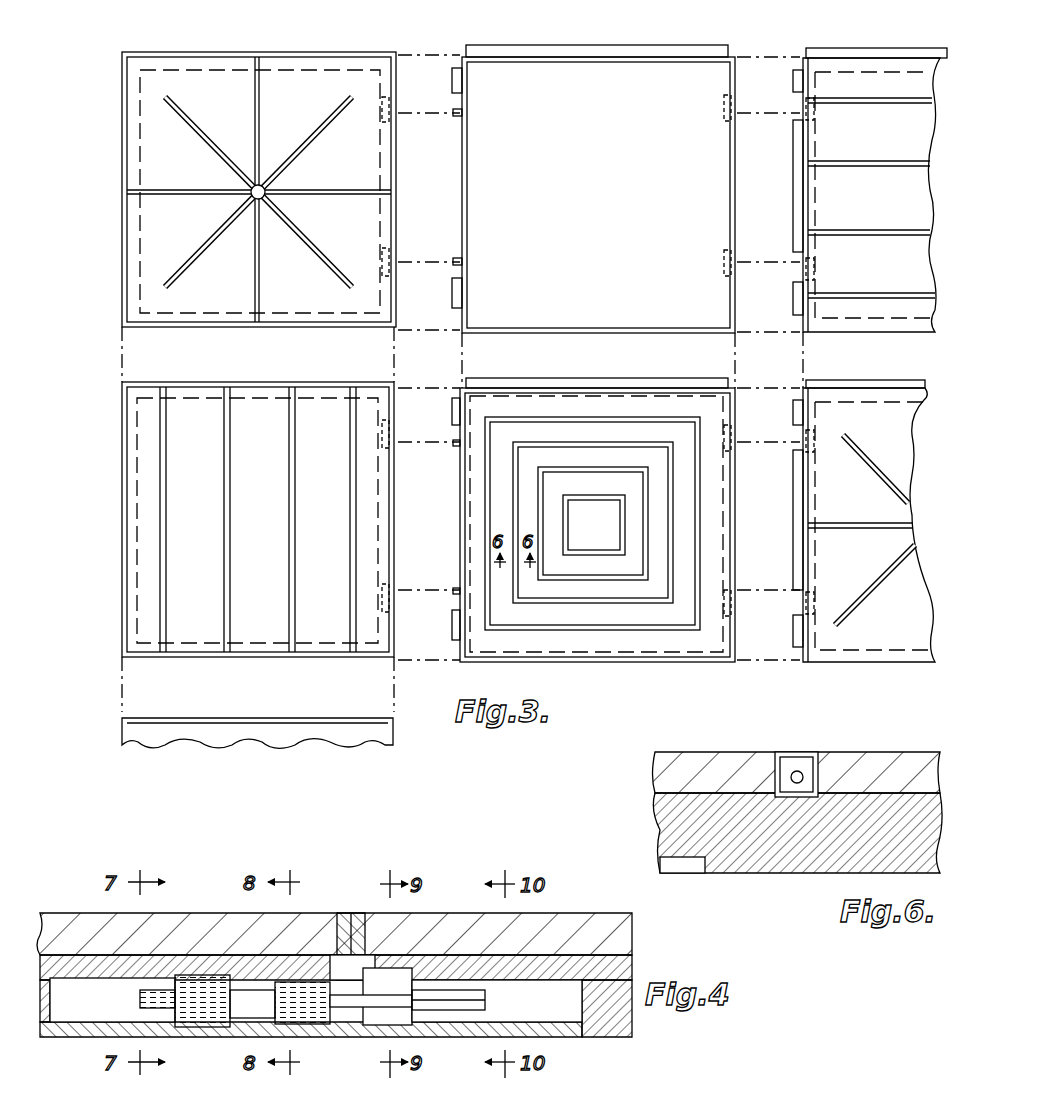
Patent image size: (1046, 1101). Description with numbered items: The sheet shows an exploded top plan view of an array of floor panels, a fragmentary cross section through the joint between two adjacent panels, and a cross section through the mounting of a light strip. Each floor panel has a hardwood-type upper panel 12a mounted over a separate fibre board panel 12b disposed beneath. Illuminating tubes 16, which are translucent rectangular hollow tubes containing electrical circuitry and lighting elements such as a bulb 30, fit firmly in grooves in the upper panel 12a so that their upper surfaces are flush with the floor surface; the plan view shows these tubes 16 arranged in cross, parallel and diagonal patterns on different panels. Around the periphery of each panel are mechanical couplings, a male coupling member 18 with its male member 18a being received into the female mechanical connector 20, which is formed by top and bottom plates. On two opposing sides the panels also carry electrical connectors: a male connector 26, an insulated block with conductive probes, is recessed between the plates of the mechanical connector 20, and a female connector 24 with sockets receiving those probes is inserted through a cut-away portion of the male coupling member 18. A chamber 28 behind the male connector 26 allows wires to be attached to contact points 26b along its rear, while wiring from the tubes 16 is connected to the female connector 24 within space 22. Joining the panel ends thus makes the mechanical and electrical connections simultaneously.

In FIG. 4, the upper panel 12a is at (590, 925).
In FIG. 6, the upper panel 12a is at (885, 765).
In FIG. 4, the fibre board panel 12b is at (367, 1006).
In FIG. 6, the illuminating tube 16 is at (810, 752).
In FIG. 3, the male coupling member 18 is at (455, 160).
In FIG. 4, the male coupling member 18 is at (360, 925).
In FIG. 3, the male member 18a is at (457, 298).
In FIG. 3, the mechanical connector 20 is at (400, 190).
In FIG. 4, the mechanical connector 20 is at (343, 950).
In FIG. 4, the space 22 is at (556, 1012).
In FIG. 3, the female connector 24 is at (456, 112).
In FIG. 4, the female connector 24 is at (370, 1010).
In FIG. 3, the male connector 26 is at (388, 260).
In FIG. 4, the male connector 26 is at (195, 1010).
In FIG. 4, the contact points 26b is at (140, 1000).
In FIG. 4, the chamber 28 is at (90, 1011).
In FIG. 6, the bulb 30 is at (810, 752).